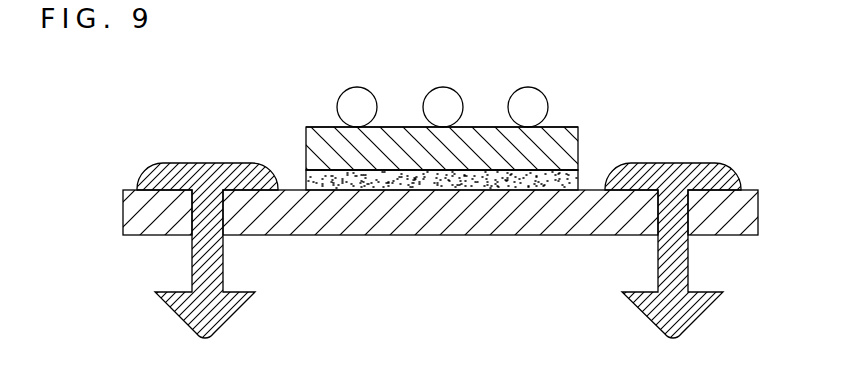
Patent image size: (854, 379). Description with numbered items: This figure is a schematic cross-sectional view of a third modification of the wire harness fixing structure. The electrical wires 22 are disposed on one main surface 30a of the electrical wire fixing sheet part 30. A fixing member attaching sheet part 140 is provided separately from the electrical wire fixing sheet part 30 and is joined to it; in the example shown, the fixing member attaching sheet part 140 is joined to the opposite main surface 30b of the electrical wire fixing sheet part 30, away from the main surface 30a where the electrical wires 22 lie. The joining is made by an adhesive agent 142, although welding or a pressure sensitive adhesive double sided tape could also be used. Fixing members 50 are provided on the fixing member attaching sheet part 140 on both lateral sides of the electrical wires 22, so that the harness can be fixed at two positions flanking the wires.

The electrical wires 22 is at (528, 98).
The electrical wire fixing sheet part 30 is at (567, 152).
The main surface 30a is at (568, 124).
The main surface 30b is at (305, 182).
The fixing member 50 is at (213, 160).
The fixing member attaching sheet part 140 is at (438, 232).
The adhesive agent 142 is at (572, 178).